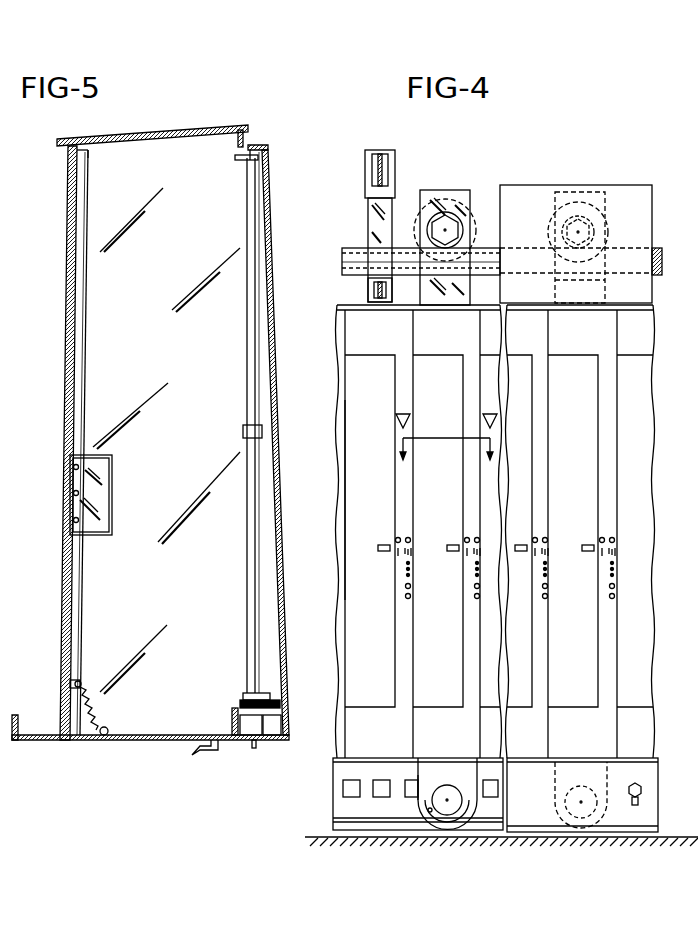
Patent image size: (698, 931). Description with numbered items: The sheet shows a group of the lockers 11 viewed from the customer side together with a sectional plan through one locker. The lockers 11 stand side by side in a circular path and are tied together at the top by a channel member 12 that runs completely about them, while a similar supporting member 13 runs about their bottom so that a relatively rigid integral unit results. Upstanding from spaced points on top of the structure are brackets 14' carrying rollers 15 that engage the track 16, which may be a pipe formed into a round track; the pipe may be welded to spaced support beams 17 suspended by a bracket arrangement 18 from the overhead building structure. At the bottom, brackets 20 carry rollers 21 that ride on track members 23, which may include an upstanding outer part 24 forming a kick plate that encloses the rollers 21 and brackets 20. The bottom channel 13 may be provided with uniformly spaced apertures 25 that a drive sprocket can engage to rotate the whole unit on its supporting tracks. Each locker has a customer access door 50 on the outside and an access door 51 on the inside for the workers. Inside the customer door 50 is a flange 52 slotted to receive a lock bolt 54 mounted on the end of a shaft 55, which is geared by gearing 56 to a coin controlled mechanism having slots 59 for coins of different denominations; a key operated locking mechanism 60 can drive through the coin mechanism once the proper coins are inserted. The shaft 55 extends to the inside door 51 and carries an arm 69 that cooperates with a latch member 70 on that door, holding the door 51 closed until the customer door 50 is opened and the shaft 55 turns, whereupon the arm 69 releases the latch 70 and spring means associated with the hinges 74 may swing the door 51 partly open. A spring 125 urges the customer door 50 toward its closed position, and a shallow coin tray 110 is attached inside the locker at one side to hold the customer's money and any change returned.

In FIG. 4, the lockers 11 is at (634, 440).
In FIG. 4, the channel member 12 is at (444, 302).
In FIG. 4, the supporting member 13 is at (341, 808).
In FIG. 4, the brackets 14' is at (527, 206).
In FIG. 4, the rollers 15 is at (471, 232).
In FIG. 4, the track 16 is at (344, 259).
In FIG. 4, the support beams 17 is at (380, 307).
In FIG. 4, the bracket arrangement 18 is at (368, 293).
In FIG. 4, the brackets 20 is at (468, 772).
In FIG. 4, the rollers 21 is at (420, 790).
In FIG. 4, the track members 23 is at (322, 838).
In FIG. 4, the upstanding outer part 24 is at (656, 792).
In FIG. 4, the apertures 25 is at (354, 792).
In FIG. 5, the customer access door 50 is at (144, 742).
In FIG. 4, the customer access door 50 is at (352, 504).
In FIG. 5, the access door 51 is at (184, 128).
In FIG. 5, the flange 52 is at (232, 724).
In FIG. 5, the lock bolt 54 is at (238, 710).
In FIG. 5, the shaft 55 is at (246, 508).
In FIG. 5, the gearing 56 is at (268, 712).
In FIG. 4, the slots 59 is at (474, 559).
In FIG. 4, the key operated locking mechanism 60 is at (601, 541).
In FIG. 5, the arm 69 is at (234, 160).
In FIG. 5, the latch member 70 is at (248, 136).
In FIG. 5, the hinges 74 is at (90, 152).
In FIG. 5, the coin tray 110 is at (112, 490).
In FIG. 5, the spring 125 is at (104, 712).